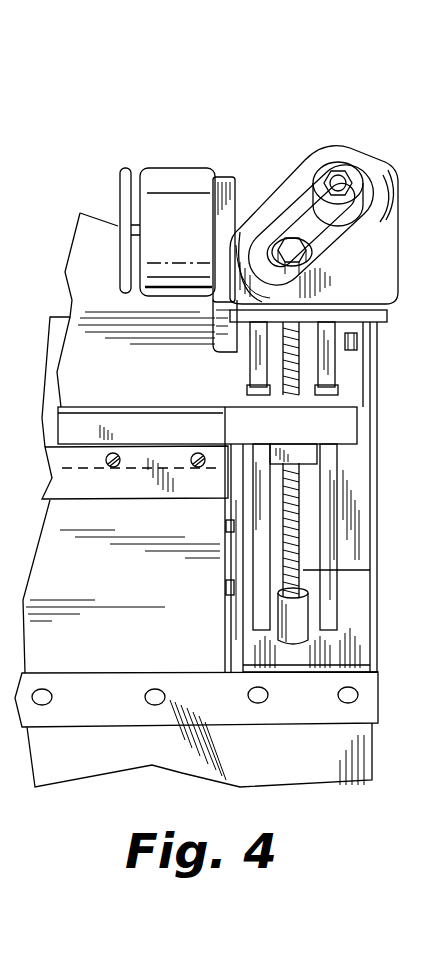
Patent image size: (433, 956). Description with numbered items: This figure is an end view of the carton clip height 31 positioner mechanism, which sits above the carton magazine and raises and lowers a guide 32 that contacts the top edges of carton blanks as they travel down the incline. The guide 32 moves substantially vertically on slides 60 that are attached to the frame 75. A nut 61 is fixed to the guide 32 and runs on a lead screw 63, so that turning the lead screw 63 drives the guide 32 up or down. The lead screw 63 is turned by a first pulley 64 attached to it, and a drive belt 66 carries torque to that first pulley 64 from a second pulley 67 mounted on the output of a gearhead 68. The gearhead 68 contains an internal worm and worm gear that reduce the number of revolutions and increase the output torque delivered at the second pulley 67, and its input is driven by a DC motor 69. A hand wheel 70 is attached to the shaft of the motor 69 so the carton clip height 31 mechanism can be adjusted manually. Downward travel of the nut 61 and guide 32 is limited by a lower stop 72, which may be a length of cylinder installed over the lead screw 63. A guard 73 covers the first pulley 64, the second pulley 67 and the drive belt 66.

The carton clip height adjustment 31 is at (270, 120).
The guide 32 is at (165, 392).
The slides 60 is at (258, 510).
The nut 61 is at (307, 452).
The lead screw 63 is at (287, 565).
The first pulley 64 is at (313, 258).
The drive belt 66 is at (345, 242).
The second pulley 67 is at (380, 178).
The gearhead 68 is at (218, 222).
The DC motor 69 is at (192, 168).
The hand wheel 70 is at (125, 168).
The lower stop 72 is at (285, 625).
The guard 73 is at (323, 150).
The frame 75 is at (300, 774).